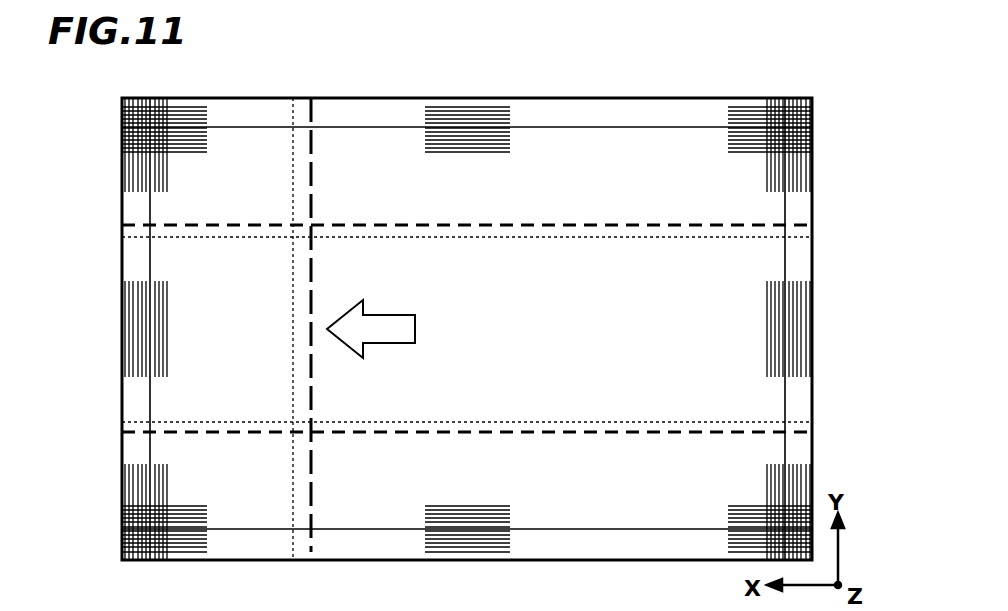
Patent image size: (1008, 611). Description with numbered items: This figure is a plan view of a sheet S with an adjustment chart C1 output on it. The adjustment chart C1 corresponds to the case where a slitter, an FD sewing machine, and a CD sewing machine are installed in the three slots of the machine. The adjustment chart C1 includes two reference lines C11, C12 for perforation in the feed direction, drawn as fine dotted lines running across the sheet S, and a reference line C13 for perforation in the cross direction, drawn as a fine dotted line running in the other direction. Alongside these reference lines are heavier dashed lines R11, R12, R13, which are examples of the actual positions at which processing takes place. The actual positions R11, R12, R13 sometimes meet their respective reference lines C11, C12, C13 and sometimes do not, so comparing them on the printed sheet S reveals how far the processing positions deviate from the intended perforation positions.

The sheet S is at (640, 97).
The adjustment chart C1 is at (523, 120).
The actual position in processing R11 is at (755, 225).
The reference line for perforation in the feed direction C11 is at (753, 237).
The reference line for perforation in the feed direction C12 is at (755, 421).
The actual position in processing R12 is at (753, 431).
The reference line for perforation in the cross direction C13 is at (295, 150).
The actual position in processing R13 is at (310, 165).